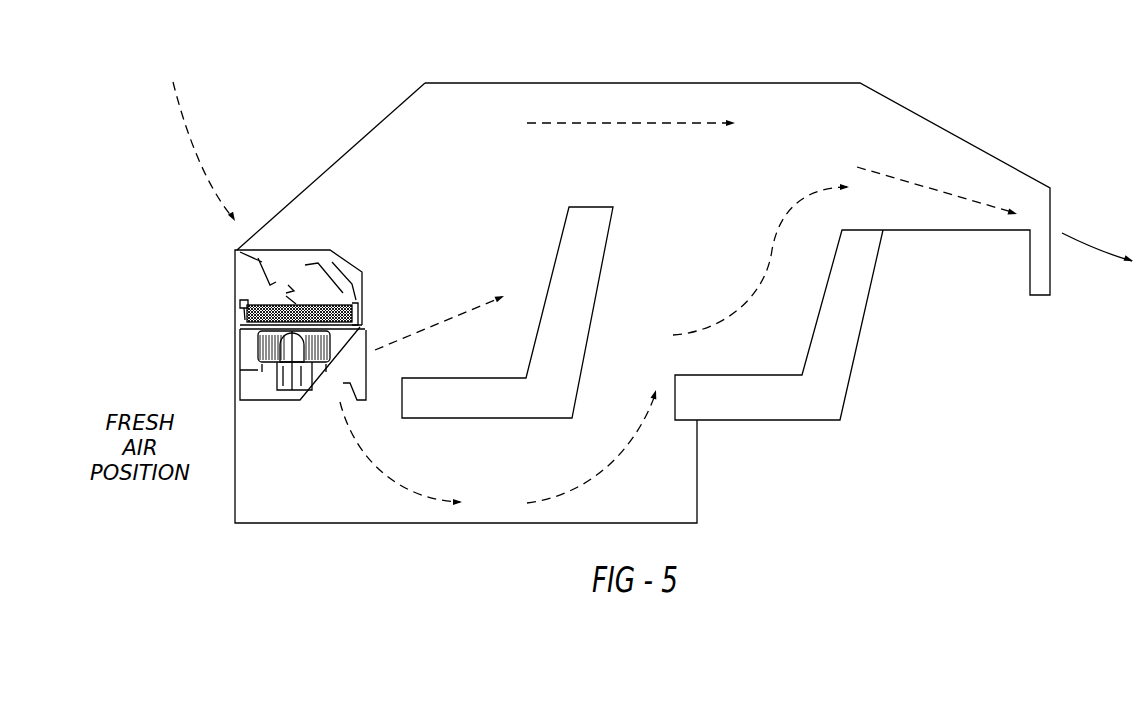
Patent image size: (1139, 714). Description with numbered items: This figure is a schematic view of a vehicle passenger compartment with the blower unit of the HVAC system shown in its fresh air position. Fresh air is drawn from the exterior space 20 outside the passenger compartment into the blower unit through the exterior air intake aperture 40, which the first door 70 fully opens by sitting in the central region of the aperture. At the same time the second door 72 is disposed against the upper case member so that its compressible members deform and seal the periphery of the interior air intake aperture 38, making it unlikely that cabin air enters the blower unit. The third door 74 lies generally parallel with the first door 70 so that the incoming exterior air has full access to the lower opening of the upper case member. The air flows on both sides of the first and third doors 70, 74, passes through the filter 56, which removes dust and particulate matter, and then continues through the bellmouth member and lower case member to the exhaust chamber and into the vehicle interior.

The exterior space 20 is at (235, 357).
The interior air intake aperture 38 is at (247, 287).
The exterior air intake aperture 40 is at (347, 275).
The filter 56 is at (291, 303).
The first door 70 is at (340, 287).
The second door 72 is at (240, 248).
The third door 74 is at (297, 290).